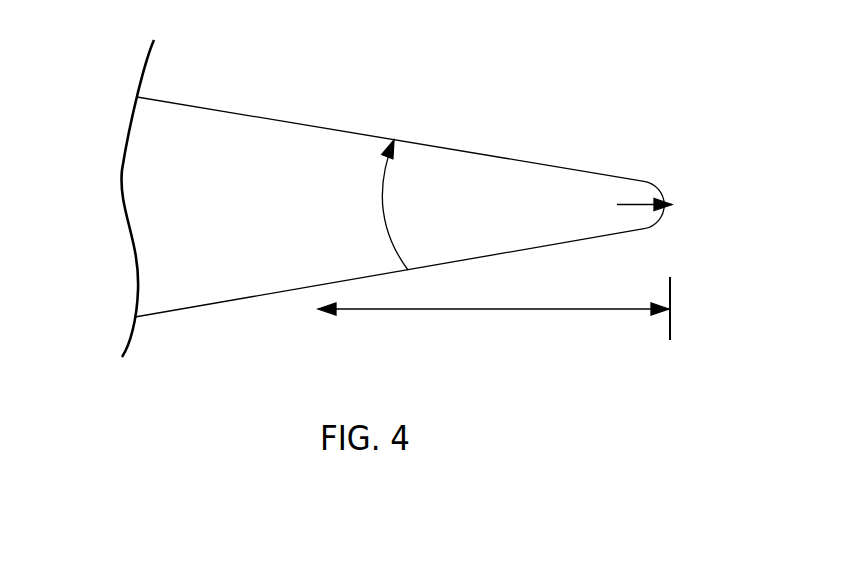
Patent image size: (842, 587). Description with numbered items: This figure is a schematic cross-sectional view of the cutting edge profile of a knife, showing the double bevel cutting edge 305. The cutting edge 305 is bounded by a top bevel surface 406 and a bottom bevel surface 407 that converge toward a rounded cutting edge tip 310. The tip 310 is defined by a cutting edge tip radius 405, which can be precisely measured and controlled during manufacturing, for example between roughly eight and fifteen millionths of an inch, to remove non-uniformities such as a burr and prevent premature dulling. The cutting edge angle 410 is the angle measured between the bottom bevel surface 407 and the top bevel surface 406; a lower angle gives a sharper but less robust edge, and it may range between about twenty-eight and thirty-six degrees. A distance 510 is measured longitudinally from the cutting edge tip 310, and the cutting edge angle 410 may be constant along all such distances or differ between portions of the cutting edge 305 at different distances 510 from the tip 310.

The cutting edge 305 is at (461, 212).
The top bevel surface 406 is at (278, 117).
The bottom bevel surface 407 is at (267, 297).
The cutting edge tip 310 is at (670, 192).
The cutting edge tip radius 405 is at (632, 206).
The cutting edge angle 410 is at (380, 212).
The distance from the cutting edge tip 510 is at (528, 308).